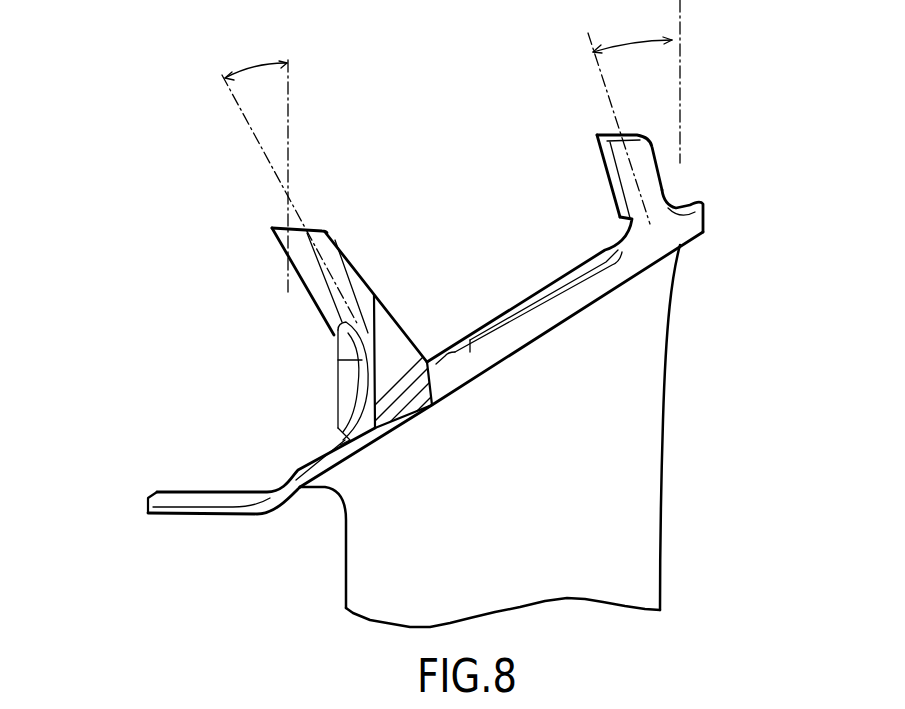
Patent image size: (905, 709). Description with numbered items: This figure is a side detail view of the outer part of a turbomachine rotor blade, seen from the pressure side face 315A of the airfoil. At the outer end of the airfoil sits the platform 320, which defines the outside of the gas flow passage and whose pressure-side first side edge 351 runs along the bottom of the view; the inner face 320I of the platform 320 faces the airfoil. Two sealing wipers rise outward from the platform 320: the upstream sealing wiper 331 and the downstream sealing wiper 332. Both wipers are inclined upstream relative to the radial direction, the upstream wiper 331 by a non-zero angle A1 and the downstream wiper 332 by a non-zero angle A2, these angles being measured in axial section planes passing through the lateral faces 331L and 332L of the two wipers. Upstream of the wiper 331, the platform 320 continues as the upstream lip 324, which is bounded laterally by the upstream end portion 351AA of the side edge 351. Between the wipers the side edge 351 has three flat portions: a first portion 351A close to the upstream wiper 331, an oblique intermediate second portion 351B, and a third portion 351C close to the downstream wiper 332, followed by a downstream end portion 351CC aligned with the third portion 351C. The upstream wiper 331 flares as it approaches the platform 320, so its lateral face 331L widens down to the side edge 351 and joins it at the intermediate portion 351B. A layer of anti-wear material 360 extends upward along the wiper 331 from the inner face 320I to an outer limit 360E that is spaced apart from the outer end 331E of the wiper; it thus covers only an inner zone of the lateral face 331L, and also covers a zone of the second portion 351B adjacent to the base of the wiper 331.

The non-zero angle A1 is at (290, 184).
The non-zero angle A2 is at (634, 112).
The pressure side face 315A is at (613, 450).
The platform 320 is at (523, 300).
The inner face of the platform 320I is at (487, 370).
The upstream end portion (upstream lip) 324 is at (230, 471).
The upstream sealing wiper 331 is at (316, 281).
The outer end of the wiper 331E is at (300, 225).
The lateral face of the wiper 331L is at (333, 243).
The downstream sealing wiper 332 is at (640, 176).
The lateral face of the wiper 332L is at (638, 168).
The first side edge 351 is at (546, 338).
The first portion 351A is at (317, 453).
The upstream end portion 351AA is at (195, 492).
The intermediate second portion 351B is at (405, 425).
The third portion 351C is at (588, 287).
The downstream end portion 351CC is at (705, 209).
The layer of anti-wear material 360 is at (599, 285).
The outer limit 360E is at (375, 295).